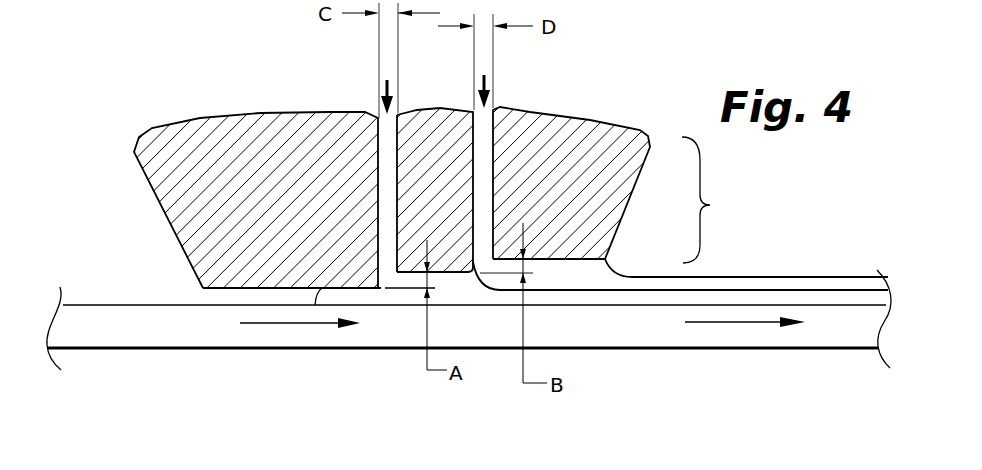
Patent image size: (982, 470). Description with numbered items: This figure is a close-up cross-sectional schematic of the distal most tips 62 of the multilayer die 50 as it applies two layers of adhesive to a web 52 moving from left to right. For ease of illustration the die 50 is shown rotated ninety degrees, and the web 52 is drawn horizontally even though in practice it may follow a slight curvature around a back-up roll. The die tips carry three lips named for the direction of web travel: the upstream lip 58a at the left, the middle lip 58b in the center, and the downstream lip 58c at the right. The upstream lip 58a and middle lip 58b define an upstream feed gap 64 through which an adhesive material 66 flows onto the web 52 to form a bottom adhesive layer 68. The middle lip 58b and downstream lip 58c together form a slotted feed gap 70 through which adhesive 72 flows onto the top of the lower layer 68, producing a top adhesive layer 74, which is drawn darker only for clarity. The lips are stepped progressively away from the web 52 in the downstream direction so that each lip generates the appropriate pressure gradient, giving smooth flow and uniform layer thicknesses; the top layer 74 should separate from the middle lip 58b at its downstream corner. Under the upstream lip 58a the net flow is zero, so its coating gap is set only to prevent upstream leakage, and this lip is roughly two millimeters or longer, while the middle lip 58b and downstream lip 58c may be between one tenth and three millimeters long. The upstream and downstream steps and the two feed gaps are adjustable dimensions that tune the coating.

The multilayer die 50 is at (145, 207).
The web 52 is at (145, 303).
The upstream lip 58a is at (213, 289).
The middle lip 58b is at (445, 274).
The downstream lip 58c is at (560, 261).
The distal most tips 62 is at (715, 200).
The upstream feed gap 64 is at (378, 162).
The adhesive material 66 is at (387, 207).
The bottom adhesive layer 68 is at (783, 290).
The slotted feed gap 70 is at (495, 128).
The adhesive 72 is at (490, 183).
The top adhesive layer 74 is at (747, 275).